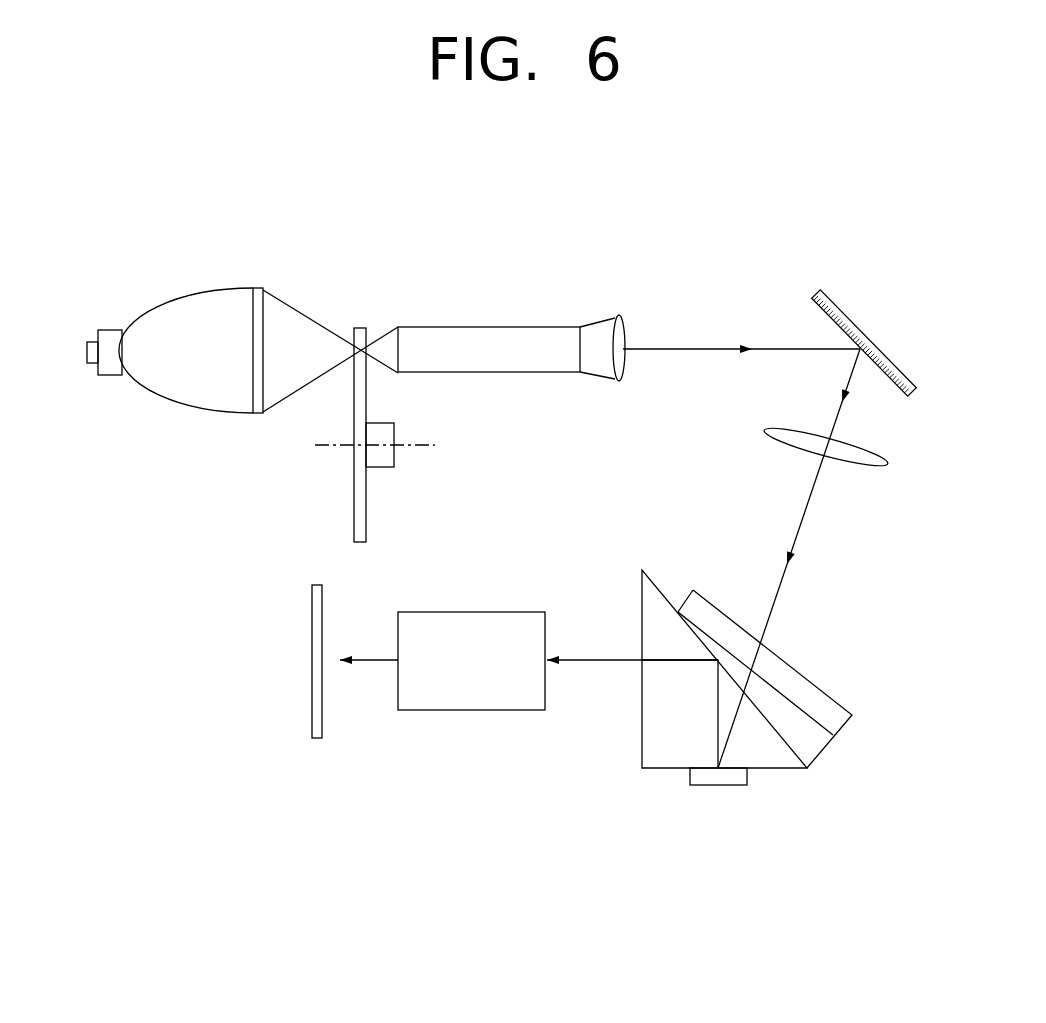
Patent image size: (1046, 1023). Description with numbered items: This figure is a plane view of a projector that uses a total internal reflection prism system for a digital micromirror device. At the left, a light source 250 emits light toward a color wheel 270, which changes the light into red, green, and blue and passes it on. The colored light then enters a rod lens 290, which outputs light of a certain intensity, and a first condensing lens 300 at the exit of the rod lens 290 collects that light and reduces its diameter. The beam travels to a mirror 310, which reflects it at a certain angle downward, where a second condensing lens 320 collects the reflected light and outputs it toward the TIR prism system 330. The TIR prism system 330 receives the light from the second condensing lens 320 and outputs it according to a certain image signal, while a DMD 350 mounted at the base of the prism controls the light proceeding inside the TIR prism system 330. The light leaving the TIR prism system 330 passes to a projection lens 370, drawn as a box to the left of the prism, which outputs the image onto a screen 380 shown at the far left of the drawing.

The light source 250 is at (203, 296).
The color wheel 270 is at (354, 509).
The rod lens 290 is at (500, 332).
The first condensing lens 300 is at (621, 316).
The mirror 310 is at (847, 317).
The second condensing lens 320 is at (862, 463).
The TIR prism system 330 is at (808, 770).
The DMD 350 is at (718, 787).
The projection lens 370 is at (465, 712).
The screen 380 is at (316, 740).